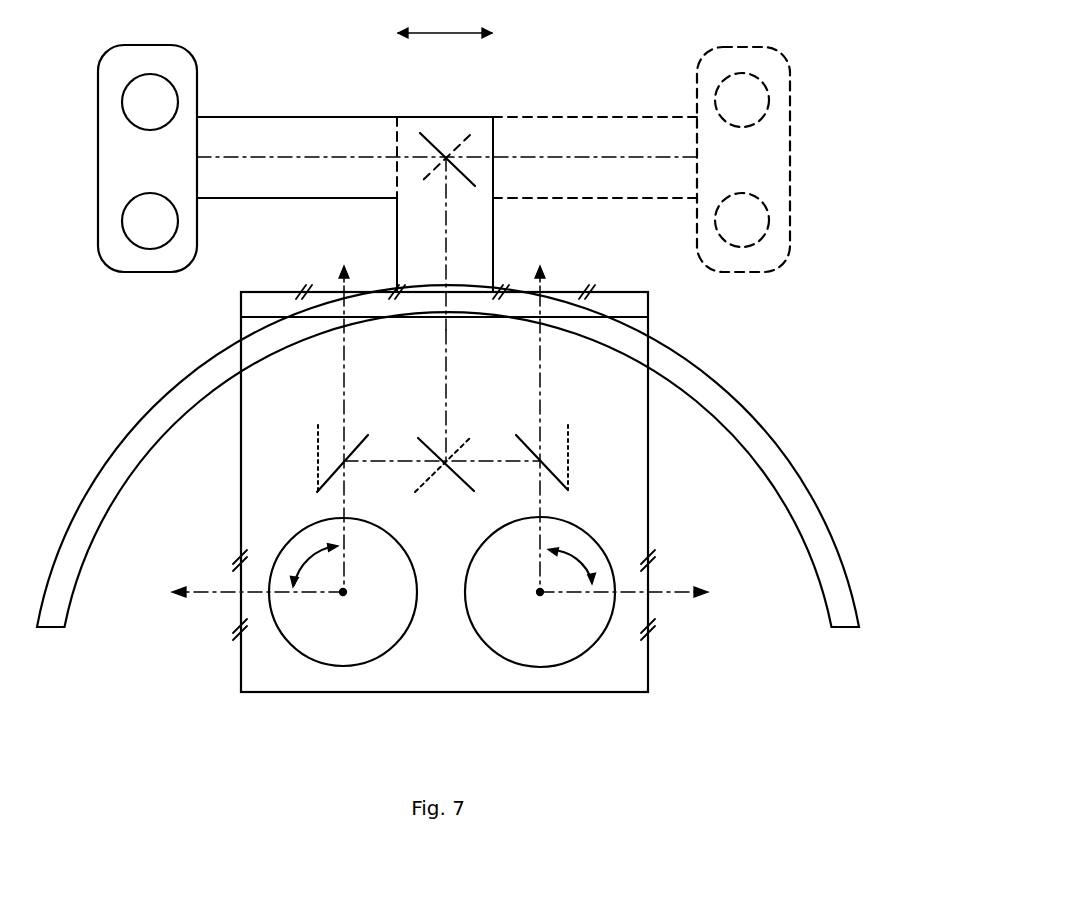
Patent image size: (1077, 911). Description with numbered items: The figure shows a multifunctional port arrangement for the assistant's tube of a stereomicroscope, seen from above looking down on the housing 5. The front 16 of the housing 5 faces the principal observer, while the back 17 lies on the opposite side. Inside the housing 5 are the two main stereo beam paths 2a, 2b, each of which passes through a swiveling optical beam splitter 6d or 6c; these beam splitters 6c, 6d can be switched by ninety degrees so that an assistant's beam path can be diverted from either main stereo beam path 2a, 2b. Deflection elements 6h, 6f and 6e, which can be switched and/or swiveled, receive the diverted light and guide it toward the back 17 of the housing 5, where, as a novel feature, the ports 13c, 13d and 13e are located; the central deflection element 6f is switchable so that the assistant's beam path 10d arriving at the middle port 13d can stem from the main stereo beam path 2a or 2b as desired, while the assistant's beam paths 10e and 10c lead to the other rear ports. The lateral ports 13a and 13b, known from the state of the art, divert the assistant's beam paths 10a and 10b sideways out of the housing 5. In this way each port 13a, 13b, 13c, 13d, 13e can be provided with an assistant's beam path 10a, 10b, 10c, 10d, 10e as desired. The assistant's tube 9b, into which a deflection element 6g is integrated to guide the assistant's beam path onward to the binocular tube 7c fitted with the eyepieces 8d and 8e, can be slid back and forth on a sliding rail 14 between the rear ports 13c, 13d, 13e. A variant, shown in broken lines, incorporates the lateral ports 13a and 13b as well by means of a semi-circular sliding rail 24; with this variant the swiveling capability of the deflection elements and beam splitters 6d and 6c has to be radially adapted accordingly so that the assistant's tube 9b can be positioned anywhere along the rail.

The main stereo beam path 2a is at (346, 592).
The main stereo beam path 2b is at (538, 592).
The housing 5 is at (258, 672).
The optical beam splitter 6c is at (527, 645).
The optical beam splitter 6d is at (330, 645).
The deflection element 6e is at (536, 448).
The deflection element 6f is at (458, 488).
The deflection element 6g is at (440, 155).
The deflection element 6h is at (362, 450).
The binocular tube 7c is at (165, 150).
The eyepiece 8d is at (150, 215).
The eyepiece 8e is at (146, 103).
The assistant's tube 9b is at (295, 135).
The assistant's beam path 10a is at (200, 590).
The assistant's beam path 10b is at (684, 590).
The assistant's beam path 10c is at (548, 372).
The assistant's beam path 10d is at (452, 380).
The assistant's beam path 10e is at (342, 342).
The port 13a is at (244, 618).
The port 13b is at (652, 615).
The port 13c is at (557, 293).
The port 13d is at (428, 318).
The port 13e is at (316, 293).
The sliding rail 14 is at (256, 300).
The front 16 is at (450, 693).
The back 17 is at (630, 305).
The semi-circular sliding rail 24 is at (695, 372).